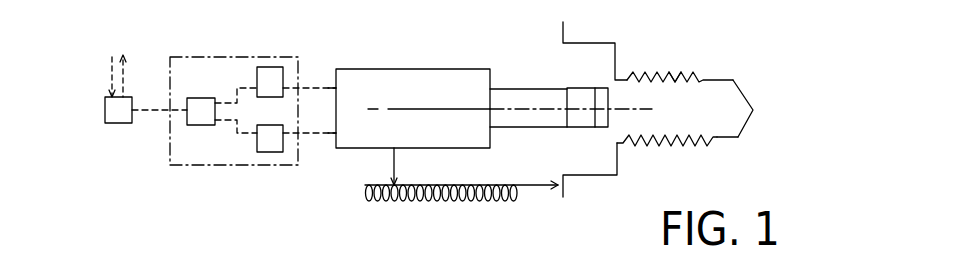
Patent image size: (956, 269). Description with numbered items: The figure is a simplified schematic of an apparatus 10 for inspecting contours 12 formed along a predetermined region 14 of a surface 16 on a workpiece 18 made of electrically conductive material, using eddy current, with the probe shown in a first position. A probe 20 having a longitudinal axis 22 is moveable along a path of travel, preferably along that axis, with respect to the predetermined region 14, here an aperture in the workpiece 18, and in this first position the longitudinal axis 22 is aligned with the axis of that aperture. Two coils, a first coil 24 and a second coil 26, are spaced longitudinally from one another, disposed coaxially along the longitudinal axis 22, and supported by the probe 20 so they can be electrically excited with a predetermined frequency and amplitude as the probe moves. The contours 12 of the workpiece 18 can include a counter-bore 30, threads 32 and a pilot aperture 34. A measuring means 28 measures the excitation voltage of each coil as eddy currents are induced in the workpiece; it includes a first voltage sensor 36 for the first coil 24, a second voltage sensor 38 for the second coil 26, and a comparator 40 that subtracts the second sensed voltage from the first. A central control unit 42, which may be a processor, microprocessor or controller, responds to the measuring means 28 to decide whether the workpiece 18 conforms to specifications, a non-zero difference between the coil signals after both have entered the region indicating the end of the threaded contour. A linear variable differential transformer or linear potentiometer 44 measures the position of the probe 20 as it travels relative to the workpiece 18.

The apparatus 10 is at (409, 30).
The contours 12 is at (628, 80).
The predetermined region 14 is at (650, 146).
The surface 16 is at (672, 73).
The workpiece 18 is at (557, 33).
The probe 20 is at (466, 68).
The longitudinal axis 22 is at (397, 108).
The first coil 24 is at (597, 88).
The second coil 26 is at (565, 88).
The measuring means 28 is at (218, 55).
The counter-bore 30 is at (617, 178).
The threads 32 is at (698, 138).
The pilot aperture 34 is at (746, 122).
The first voltage sensor 36 is at (277, 67).
The second voltage sensor 38 is at (265, 152).
The comparator 40 is at (200, 98).
The central control unit 42 is at (121, 124).
The linear variable differential transformer or linear potentiometer 44 is at (384, 201).